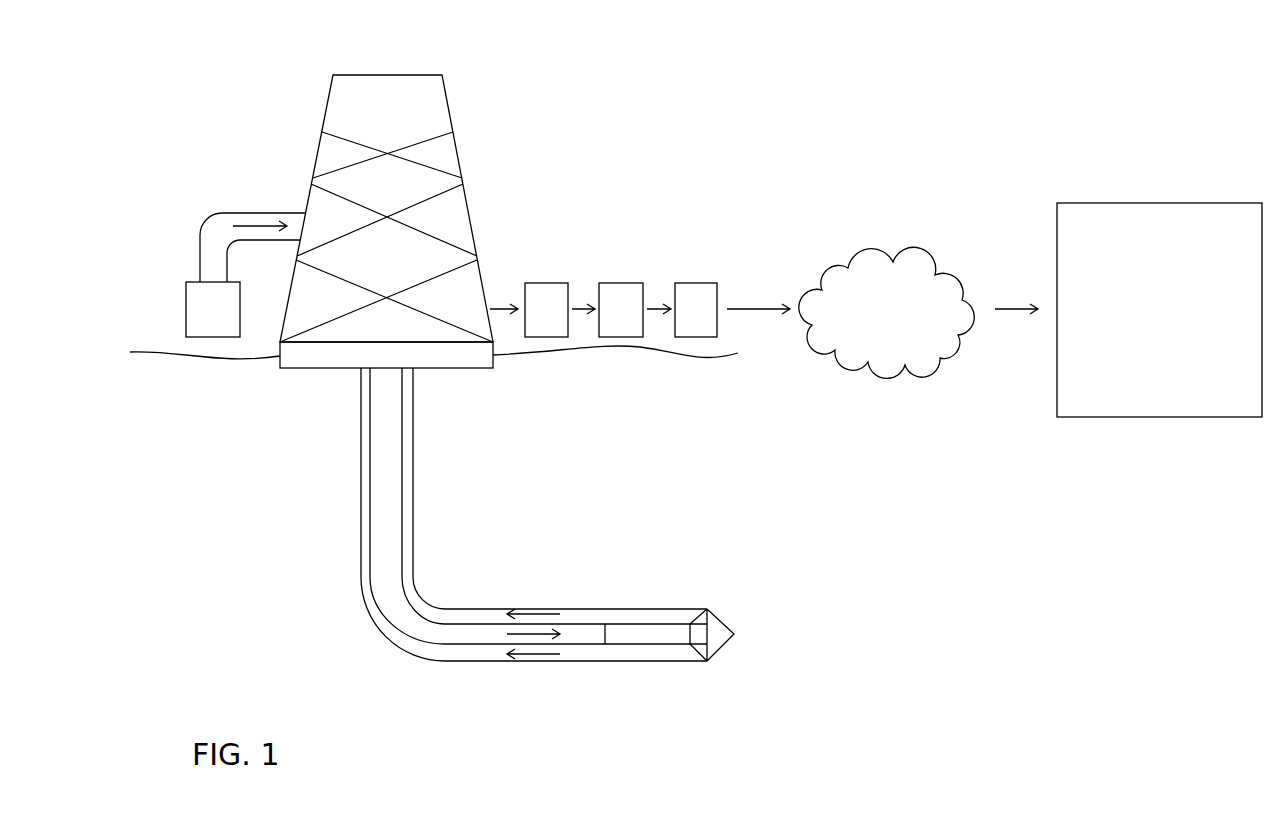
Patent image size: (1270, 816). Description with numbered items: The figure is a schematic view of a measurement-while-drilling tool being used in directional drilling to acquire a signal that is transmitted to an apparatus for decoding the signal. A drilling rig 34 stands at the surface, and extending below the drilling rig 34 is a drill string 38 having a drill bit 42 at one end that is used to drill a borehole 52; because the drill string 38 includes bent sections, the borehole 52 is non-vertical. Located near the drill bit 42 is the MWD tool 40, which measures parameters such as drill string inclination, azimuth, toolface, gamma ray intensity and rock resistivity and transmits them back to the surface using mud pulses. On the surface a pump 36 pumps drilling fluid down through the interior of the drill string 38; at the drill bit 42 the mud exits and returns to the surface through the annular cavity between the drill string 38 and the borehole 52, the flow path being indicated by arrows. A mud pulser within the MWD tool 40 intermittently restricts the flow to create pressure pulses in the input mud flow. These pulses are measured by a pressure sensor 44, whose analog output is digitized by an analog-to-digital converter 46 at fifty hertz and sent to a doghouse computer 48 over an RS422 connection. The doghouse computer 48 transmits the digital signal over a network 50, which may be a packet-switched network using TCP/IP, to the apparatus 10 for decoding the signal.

The apparatus for decoding the signal 10 is at (1159, 310).
The drilling rig 34 is at (407, 75).
The pump 36 is at (246, 275).
The drill string 38 is at (402, 442).
The MWD tool 40 is at (623, 646).
The drill bit 42 is at (712, 609).
The pressure sensor 44 is at (535, 283).
The analog-to-digital converter 46 is at (616, 283).
The doghouse computer 48 is at (686, 283).
The network 50 is at (887, 312).
The borehole 52 is at (360, 475).